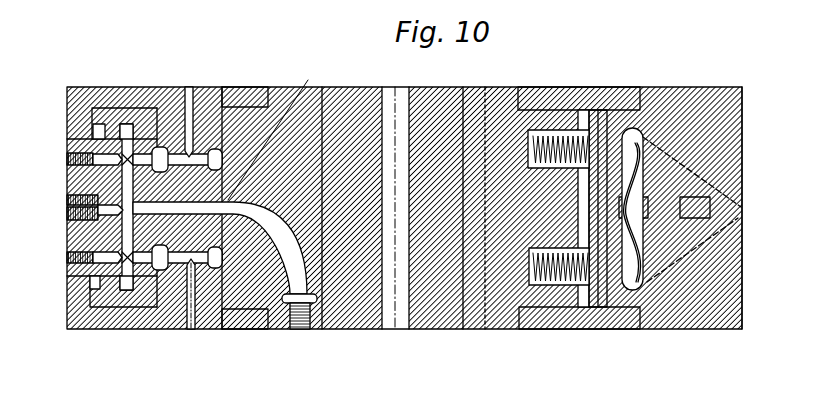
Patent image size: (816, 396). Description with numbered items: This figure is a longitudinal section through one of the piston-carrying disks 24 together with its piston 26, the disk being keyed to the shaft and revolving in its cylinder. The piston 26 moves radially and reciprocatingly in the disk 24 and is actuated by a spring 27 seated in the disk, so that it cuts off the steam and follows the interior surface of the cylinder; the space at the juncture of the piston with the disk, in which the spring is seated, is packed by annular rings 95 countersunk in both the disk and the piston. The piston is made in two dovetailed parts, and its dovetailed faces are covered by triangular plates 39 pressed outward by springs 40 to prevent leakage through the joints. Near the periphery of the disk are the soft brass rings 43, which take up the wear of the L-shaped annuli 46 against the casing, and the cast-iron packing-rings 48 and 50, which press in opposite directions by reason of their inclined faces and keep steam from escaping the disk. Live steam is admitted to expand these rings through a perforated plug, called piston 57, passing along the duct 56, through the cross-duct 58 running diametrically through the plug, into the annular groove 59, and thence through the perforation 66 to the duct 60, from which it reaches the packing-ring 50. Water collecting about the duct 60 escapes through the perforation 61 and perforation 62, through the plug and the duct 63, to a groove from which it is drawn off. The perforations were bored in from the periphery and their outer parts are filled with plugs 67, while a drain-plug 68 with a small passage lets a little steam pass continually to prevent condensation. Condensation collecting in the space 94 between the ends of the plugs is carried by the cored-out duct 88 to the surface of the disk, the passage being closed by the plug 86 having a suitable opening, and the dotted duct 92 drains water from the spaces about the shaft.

The piston-carrying disk 24 is at (507, 329).
The piston 26 is at (742, 126).
The spring 27 is at (578, 142).
The triangular plate 39 is at (690, 177).
The spring 40 is at (627, 230).
The soft brass ring 43 is at (88, 132).
The L-shaped annulus 46 is at (67, 87).
The cast-iron packing-ring 48 is at (101, 125).
The cast-iron packing-ring 50 is at (117, 126).
The duct 56 is at (192, 88).
The piston (perforated plug) 57 is at (219, 87).
The cross-duct 58 is at (178, 153).
The annular groove 59 is at (165, 150).
The duct 60 is at (127, 230).
The perforation 61 is at (143, 262).
The perforation 62 is at (180, 260).
The duct 63 is at (190, 317).
The perforation 66 is at (138, 163).
The plug 67 is at (70, 158).
The drain-plug 68 is at (100, 217).
The plug 86 is at (305, 330).
The duct 88 is at (307, 272).
The duct 92 is at (488, 329).
The space 94 is at (282, 130).
The annular ring 95 is at (580, 88).